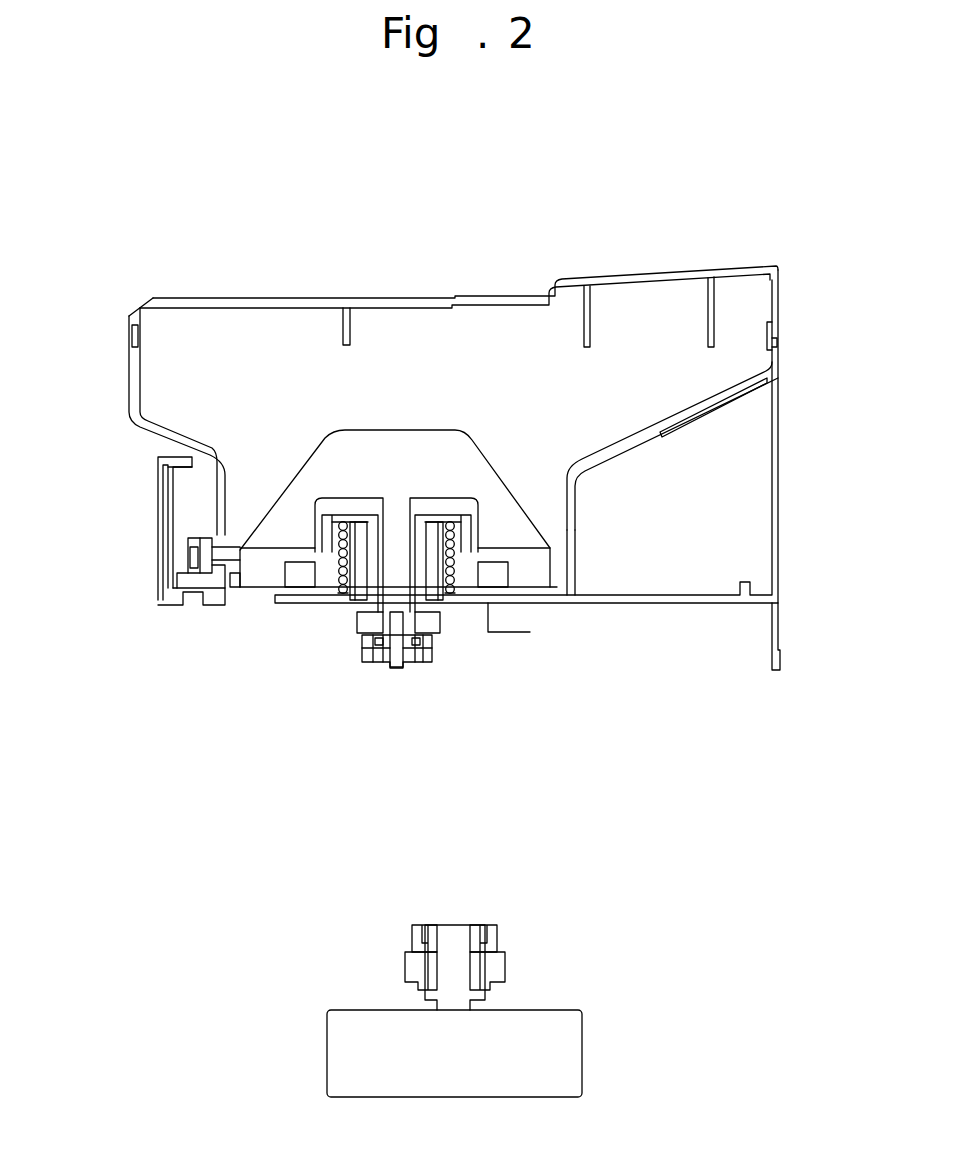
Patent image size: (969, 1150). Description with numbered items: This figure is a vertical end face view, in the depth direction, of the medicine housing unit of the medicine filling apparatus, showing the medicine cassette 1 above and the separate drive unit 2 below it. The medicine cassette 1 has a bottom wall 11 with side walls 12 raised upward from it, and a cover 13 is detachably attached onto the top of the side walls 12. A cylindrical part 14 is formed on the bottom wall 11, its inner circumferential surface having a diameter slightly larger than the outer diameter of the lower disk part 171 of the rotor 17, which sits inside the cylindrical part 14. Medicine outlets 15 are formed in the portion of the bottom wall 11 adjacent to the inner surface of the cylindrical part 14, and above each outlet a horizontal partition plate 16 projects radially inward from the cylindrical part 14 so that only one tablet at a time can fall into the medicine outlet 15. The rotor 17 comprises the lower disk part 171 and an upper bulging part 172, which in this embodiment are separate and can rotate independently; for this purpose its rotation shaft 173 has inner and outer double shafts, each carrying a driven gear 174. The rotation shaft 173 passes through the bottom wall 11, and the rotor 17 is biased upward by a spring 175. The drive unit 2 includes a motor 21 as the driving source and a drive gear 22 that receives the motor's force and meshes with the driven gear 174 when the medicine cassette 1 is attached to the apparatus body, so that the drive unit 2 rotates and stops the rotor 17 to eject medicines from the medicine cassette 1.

The medicine cassette 1 is at (112, 262).
The drive unit 2 is at (594, 972).
The bottom wall 11 is at (662, 604).
The side walls 12 is at (133, 377).
The cover 13 is at (250, 298).
The cylindrical part 14 is at (220, 505).
The medicine outlets 15 is at (220, 600).
The partition plate 16 is at (212, 555).
The rotor 17 is at (823, 450).
The lower disk part 171 is at (580, 583).
The upper bulging part 172 is at (580, 522).
The rotation shaft 173 is at (373, 573).
The driven gear 174 is at (440, 622).
The spring 175 is at (340, 562).
The motor 21 is at (567, 1050).
The drive gear 22 is at (415, 937).